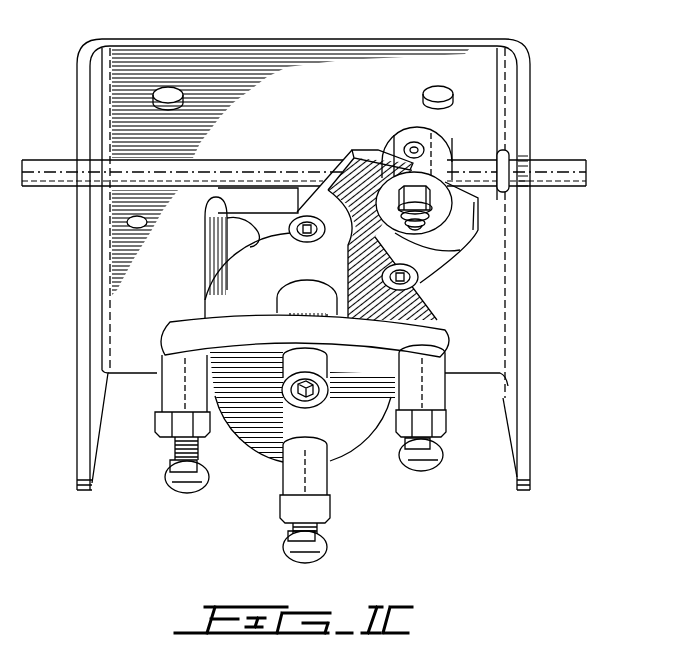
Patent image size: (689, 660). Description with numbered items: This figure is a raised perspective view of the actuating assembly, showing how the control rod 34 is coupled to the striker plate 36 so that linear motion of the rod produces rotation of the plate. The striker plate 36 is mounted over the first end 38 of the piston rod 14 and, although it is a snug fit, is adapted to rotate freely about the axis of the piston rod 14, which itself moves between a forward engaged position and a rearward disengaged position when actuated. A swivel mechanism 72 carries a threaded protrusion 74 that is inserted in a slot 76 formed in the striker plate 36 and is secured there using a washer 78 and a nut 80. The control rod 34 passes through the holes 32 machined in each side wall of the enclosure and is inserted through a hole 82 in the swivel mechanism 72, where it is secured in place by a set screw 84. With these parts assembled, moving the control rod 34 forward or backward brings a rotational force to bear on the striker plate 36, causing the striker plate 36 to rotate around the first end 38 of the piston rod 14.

The piston rod 14 is at (500, 343).
The holes 32 is at (509, 152).
The control rod 34 is at (30, 170).
The striker plate 36 is at (207, 303).
The first end 38 is at (262, 338).
The swivel mechanism 72 is at (400, 142).
The threaded protrusion 74 is at (420, 280).
The slot 76 is at (337, 190).
The washer 78 is at (440, 181).
The nut 80 is at (484, 200).
The hole 82 is at (443, 133).
The set screw 84 is at (412, 143).